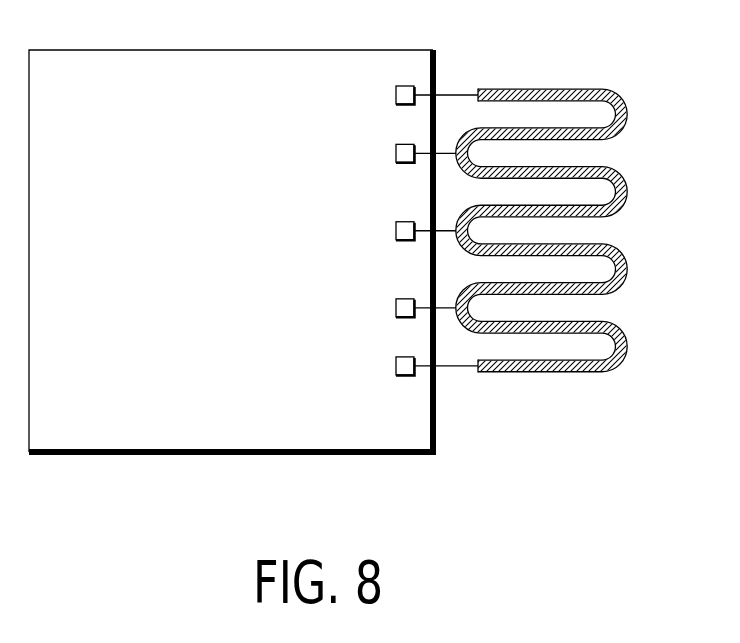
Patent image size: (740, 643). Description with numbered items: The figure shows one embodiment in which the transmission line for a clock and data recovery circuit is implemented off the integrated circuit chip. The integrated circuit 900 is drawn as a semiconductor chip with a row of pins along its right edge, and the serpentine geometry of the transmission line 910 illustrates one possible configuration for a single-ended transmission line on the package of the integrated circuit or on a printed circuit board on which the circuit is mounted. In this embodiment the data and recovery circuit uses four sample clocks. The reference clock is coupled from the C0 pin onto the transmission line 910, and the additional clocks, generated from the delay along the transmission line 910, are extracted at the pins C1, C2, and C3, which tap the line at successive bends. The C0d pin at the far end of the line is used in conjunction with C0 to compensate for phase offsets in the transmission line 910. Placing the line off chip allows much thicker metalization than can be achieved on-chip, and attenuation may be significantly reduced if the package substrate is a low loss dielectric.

The integrated circuit 900 is at (168, 286).
The transmission line 910 is at (595, 87).
The C0 pin C0 is at (416, 94).
The C1 pin C1 is at (405, 153).
The C2 pin C2 is at (404, 231).
The C3 pin C3 is at (404, 308).
The C0d pin C0d is at (407, 365).